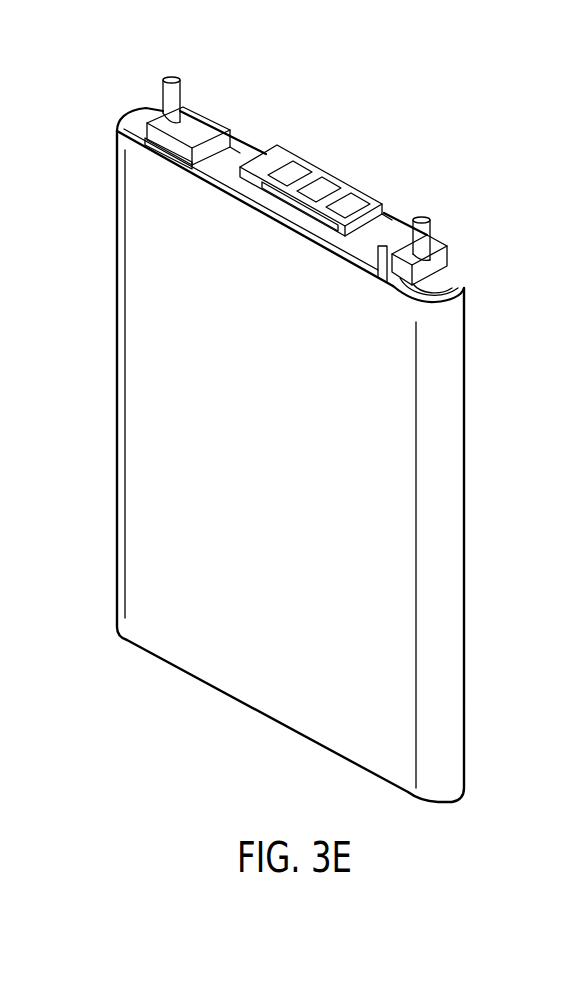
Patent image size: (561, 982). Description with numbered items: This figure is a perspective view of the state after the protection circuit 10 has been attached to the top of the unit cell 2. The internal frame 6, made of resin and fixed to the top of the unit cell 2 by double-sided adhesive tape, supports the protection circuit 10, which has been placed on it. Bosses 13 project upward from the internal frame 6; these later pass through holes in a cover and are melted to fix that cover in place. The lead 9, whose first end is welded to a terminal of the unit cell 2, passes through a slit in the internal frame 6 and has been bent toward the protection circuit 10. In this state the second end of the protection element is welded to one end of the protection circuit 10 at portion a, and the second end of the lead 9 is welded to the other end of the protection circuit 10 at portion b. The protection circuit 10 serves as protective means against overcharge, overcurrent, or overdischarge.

The unit cell 2 is at (447, 471).
The internal frame 6 is at (199, 125).
The lead 9 is at (403, 250).
The protection circuit 10 is at (326, 188).
The bosses 13 is at (160, 96).
The portion a is at (243, 147).
The portion b is at (389, 227).